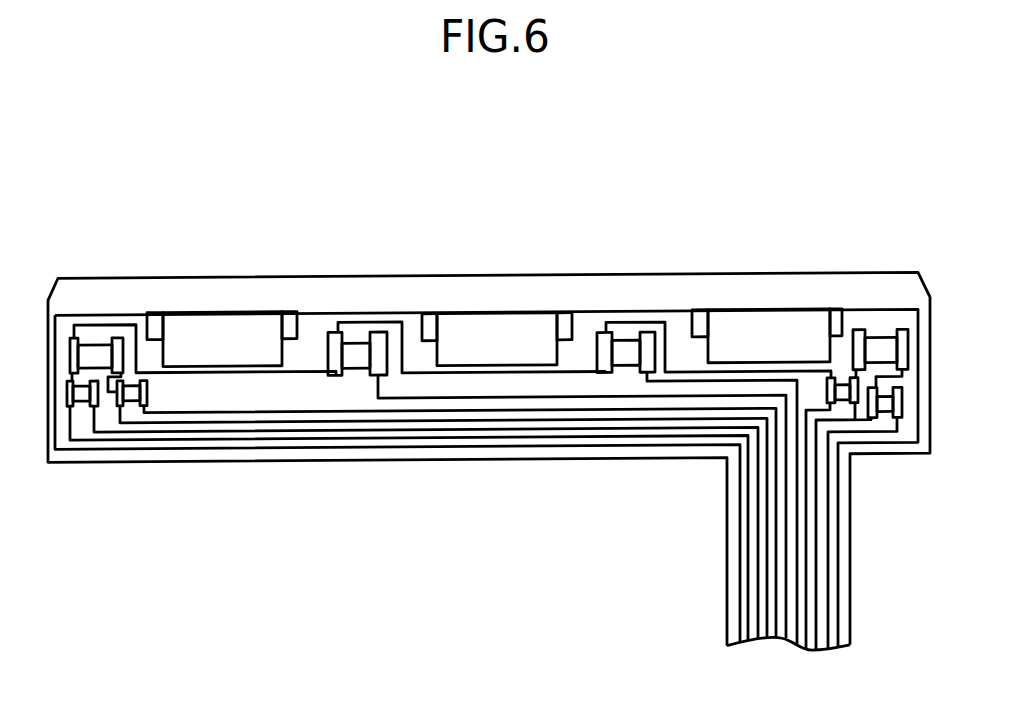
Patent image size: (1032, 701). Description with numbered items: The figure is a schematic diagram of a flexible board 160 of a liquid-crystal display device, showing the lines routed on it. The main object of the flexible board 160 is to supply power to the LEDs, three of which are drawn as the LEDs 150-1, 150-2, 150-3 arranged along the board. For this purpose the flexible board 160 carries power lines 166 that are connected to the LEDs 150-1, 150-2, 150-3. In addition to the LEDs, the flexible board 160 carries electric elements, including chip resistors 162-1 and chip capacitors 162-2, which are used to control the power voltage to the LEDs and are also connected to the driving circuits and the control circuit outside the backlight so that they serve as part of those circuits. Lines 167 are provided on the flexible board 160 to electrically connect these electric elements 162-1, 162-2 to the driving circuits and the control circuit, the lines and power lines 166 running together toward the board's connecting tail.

The LED 150-1 is at (773, 340).
The LED 150-2 is at (505, 345).
The LED 150-3 is at (228, 343).
The flexible board 160 is at (446, 462).
The chip resistor 162-1 is at (83, 398).
The chip capacitor 162-2 is at (623, 353).
The power line 166 is at (358, 442).
The line 167 is at (554, 398).